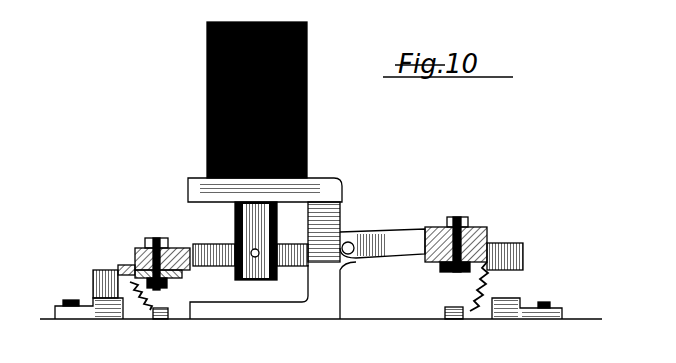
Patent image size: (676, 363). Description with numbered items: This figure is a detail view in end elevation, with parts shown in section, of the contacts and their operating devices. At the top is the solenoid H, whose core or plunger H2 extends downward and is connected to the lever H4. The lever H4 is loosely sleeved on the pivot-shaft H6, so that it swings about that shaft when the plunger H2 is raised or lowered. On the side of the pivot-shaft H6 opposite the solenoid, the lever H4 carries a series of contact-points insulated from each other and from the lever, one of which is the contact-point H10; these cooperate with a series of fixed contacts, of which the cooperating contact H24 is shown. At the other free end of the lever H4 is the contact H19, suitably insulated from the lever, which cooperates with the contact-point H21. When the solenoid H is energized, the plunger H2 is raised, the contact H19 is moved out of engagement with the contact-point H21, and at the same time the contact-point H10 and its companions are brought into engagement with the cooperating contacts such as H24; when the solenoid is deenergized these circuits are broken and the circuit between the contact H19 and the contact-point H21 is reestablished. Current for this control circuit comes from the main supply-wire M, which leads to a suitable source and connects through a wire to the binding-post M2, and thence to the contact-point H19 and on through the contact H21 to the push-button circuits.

The solenoid H is at (307, 108).
The core or plunger H2 is at (235, 212).
The lever H4 is at (297, 265).
The pivot-shaft H6 is at (353, 243).
The contact-point H10 is at (525, 247).
The contact H19 is at (93, 280).
The contact-point H21 is at (83, 314).
The cooperating contact H24 is at (553, 310).
The main supply-wire M is at (447, 316).
The binding-post M2 is at (163, 313).